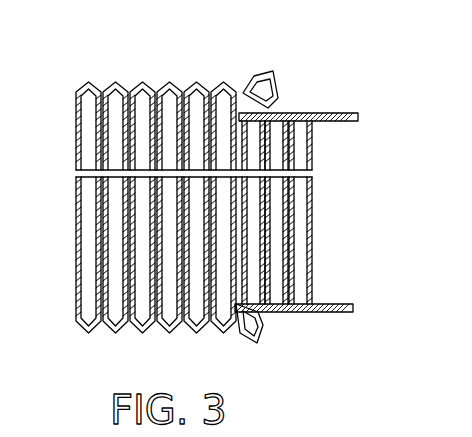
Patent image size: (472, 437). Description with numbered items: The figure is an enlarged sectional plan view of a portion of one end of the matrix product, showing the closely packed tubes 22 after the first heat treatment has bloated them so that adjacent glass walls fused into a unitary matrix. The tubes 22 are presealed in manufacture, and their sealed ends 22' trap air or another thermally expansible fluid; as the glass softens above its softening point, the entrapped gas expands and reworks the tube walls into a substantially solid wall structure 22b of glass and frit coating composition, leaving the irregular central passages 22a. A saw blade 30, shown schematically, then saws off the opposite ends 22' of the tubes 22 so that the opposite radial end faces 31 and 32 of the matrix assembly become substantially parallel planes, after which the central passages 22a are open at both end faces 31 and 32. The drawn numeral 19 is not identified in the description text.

The filter medium 19 is at (110, 124).
The tubes 22 is at (216, 203).
The sealed ends of tubes 22' is at (207, 203).
The central passages 22a is at (305, 258).
The solid wall structure 22b is at (236, 100).
The saw blade 30 is at (319, 209).
The radial end face of matrix assembly 31 is at (302, 114).
The radial end face of matrix assembly 32 is at (300, 312).